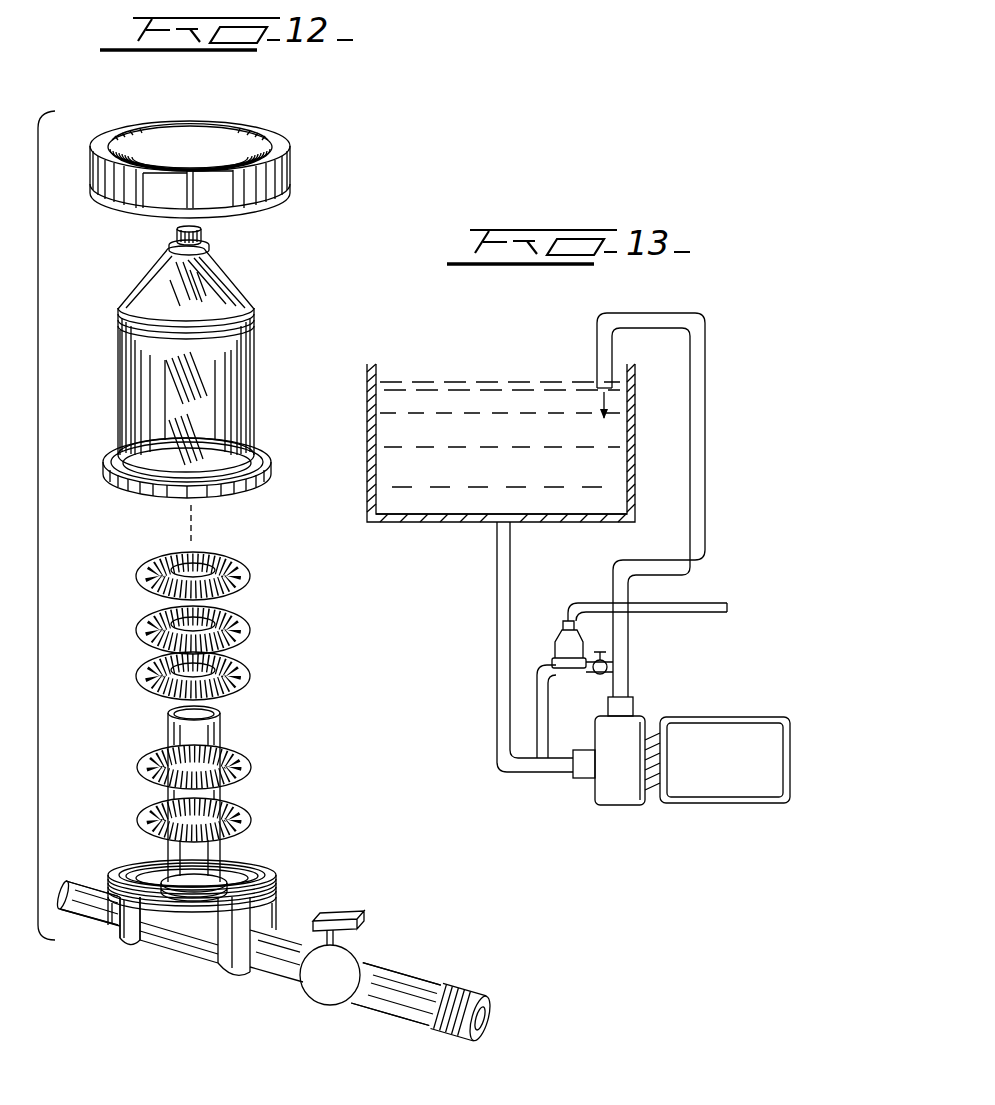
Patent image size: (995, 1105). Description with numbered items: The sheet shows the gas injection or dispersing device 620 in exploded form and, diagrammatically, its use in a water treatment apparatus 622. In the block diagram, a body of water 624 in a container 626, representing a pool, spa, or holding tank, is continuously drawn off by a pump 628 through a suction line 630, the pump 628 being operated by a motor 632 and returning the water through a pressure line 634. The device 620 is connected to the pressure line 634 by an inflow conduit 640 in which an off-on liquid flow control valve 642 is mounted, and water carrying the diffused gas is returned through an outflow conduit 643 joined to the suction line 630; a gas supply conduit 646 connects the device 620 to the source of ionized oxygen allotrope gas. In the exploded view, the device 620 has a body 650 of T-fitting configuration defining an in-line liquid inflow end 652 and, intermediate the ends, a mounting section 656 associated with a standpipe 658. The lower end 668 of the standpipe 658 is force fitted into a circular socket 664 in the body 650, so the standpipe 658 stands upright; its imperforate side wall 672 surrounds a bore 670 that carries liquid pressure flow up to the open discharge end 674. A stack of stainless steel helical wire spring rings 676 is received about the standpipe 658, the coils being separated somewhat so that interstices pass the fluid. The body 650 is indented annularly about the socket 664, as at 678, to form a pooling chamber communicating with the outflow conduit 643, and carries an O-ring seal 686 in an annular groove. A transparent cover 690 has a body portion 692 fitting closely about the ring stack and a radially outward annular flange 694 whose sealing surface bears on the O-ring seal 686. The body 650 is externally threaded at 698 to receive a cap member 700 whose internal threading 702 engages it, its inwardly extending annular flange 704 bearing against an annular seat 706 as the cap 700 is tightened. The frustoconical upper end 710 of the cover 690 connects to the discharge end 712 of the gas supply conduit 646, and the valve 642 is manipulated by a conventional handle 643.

In FIG. 12, the cap member 700 is at (284, 140).
In FIG. 12, the internal threading 702 is at (218, 140).
In FIG. 12, the inwardly extending annular flange 704 is at (115, 138).
In FIG. 12, the annular seat 706 is at (110, 456).
In FIG. 12, the upper end of cover 710 is at (220, 266).
In FIG. 12, the discharge end of gas flow supply line 712 is at (172, 232).
In FIG. 12, the cover 690 is at (252, 335).
In FIG. 13, the cover 690 is at (583, 626).
In FIG. 12, the body portion of cover 692 is at (256, 397).
In FIG. 12, the annular flange of cover 694 is at (265, 468).
In FIG. 12, the helical wire spring rings 676 is at (255, 578).
In FIG. 12, the bore 670 is at (222, 710).
In FIG. 12, the side wall 672 is at (220, 742).
In FIG. 12, the discharge end 674 is at (170, 722).
In FIG. 12, the standpipe 658 is at (212, 812).
In FIG. 12, the socket 664 is at (165, 878).
In FIG. 12, the lower end of standpipe 668 is at (225, 874).
In FIG. 12, the O-ring seal 686 is at (132, 872).
In FIG. 12, the annular indentation 678 is at (268, 872).
In FIG. 12, the external threading 698 is at (262, 884).
In FIG. 12, the body 650 is at (284, 911).
In FIG. 12, the outflow conduit 643 is at (97, 910).
In FIG. 13, the outflow conduit 643 is at (537, 715).
In FIG. 12, the mounting section 656 is at (180, 940).
In FIG. 13, the mounting section 656 is at (567, 669).
In FIG. 12, the in-line liquid inflow end 652 is at (232, 954).
In FIG. 12, the off-on liquid flow control valve 642 is at (324, 1003).
In FIG. 13, the off-on liquid flow control valve 642 is at (592, 672).
In FIG. 13, the apparatus 622 is at (722, 296).
In FIG. 13, the body of water 624 is at (443, 375).
In FIG. 13, the container 626 is at (401, 526).
In FIG. 13, the pressure line 634 is at (707, 435).
In FIG. 13, the gas supply conduit 646 is at (703, 604).
In FIG. 13, the suction line 630 is at (500, 660).
In FIG. 13, the inflow conduit 640 is at (608, 665).
In FIG. 13, the pump 628 is at (624, 796).
In FIG. 13, the motor 632 is at (735, 797).
In FIG. 12, the gas injection or dispersing device 620 is at (307, 229).
In FIG. 13, the gas injection or dispersing device 620 is at (548, 630).